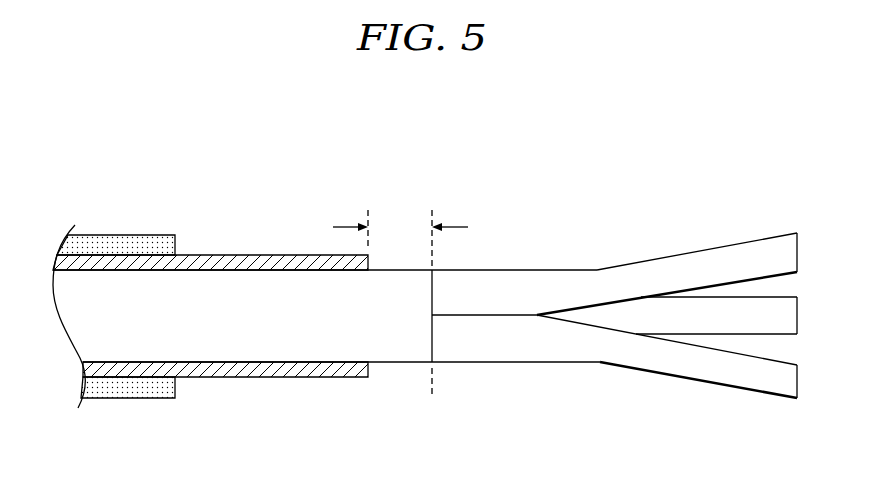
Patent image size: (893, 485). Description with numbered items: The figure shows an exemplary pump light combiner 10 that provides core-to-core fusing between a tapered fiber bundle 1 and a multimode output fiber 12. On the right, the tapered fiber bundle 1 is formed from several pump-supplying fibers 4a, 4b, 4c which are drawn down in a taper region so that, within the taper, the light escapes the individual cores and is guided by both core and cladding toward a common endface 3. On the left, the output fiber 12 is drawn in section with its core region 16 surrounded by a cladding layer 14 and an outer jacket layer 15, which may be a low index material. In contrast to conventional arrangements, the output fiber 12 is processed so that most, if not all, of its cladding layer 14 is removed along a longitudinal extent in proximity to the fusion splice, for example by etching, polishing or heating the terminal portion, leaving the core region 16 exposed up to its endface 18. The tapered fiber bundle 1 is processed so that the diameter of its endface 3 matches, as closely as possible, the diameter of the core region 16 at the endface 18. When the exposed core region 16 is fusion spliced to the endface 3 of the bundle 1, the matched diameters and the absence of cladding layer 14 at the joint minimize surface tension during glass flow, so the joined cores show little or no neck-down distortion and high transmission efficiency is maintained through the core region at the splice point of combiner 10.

The combiner 10 is at (682, 98).
The output fiber 12 is at (254, 181).
The tapered fiber bundle 1 is at (620, 182).
The outer jacket layer 15 is at (123, 238).
The cladding layer 14 is at (275, 262).
The core region 16 is at (97, 328).
The endface 3 is at (433, 295).
The endface 18 is at (432, 337).
The fiber 4a is at (772, 248).
The fiber 4b is at (784, 315).
The fiber 4c is at (769, 381).